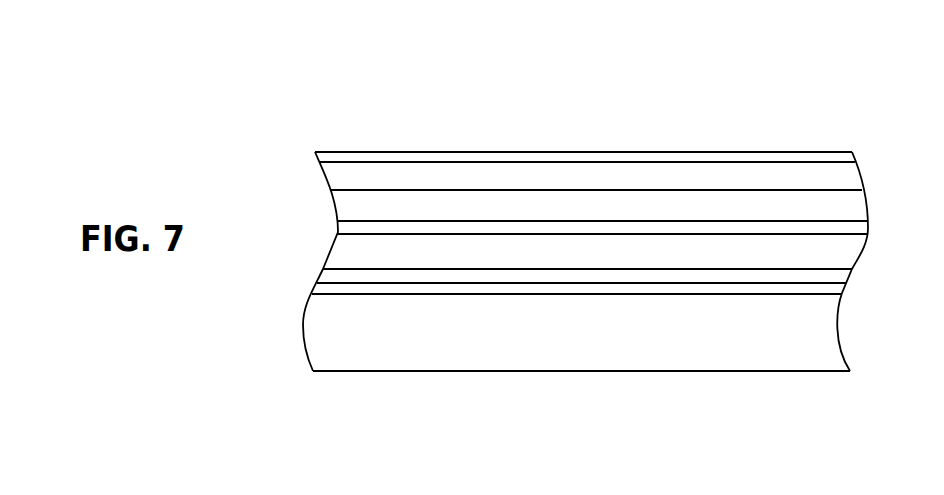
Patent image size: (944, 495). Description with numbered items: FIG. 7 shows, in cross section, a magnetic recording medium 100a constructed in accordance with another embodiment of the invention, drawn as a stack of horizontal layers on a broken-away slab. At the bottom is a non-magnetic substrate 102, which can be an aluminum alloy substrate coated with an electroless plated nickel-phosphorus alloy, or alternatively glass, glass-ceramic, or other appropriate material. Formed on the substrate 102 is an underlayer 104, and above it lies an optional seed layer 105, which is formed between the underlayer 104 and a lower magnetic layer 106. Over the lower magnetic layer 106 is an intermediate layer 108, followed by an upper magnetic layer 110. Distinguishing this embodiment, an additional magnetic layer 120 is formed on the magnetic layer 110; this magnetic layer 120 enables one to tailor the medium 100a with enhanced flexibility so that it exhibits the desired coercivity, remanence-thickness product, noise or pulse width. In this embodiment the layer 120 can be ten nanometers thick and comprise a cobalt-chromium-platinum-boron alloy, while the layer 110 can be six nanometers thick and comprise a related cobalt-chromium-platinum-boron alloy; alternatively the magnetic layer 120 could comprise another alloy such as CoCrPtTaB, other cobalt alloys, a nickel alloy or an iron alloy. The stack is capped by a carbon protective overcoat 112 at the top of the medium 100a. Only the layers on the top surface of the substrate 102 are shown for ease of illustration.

The magnetic recording medium 100a is at (586, 79).
The non-magnetic substrate 102 is at (737, 346).
The underlayer 104 is at (485, 292).
The seed layer 105 is at (452, 277).
The lower magnetic layer 106 is at (748, 264).
The intermediate layer 108 is at (557, 229).
The upper magnetic layer 110 is at (755, 205).
The carbon protective overcoat 112 is at (383, 157).
The magnetic layer 120 is at (438, 180).